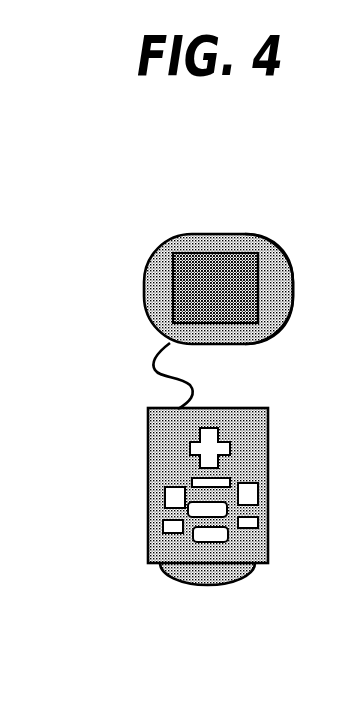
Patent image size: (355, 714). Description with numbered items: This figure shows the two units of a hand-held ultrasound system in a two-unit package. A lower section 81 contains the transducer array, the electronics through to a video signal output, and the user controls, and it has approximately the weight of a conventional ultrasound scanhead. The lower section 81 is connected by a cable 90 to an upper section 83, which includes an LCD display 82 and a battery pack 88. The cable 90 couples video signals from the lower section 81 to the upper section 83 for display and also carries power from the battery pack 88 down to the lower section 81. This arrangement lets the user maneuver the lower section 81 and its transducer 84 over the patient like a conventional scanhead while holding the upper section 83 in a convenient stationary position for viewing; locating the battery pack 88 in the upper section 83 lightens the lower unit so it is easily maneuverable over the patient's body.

The lower section 81 is at (270, 472).
The LCD display 82 is at (233, 253).
The upper section 83 is at (144, 273).
The transducer 84 is at (208, 585).
The battery pack 88 is at (292, 312).
The cable 90 is at (158, 376).